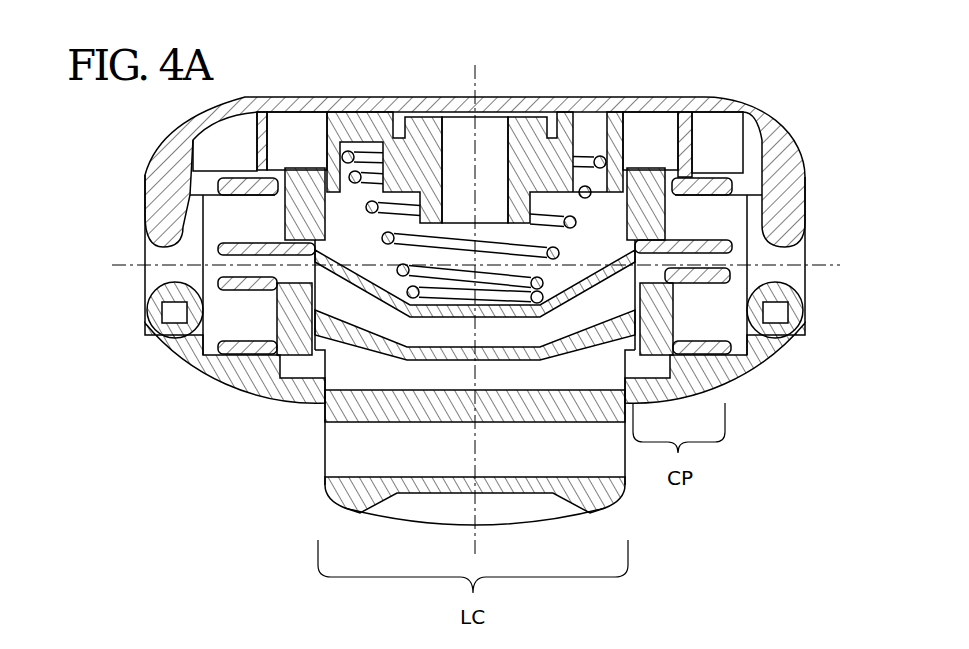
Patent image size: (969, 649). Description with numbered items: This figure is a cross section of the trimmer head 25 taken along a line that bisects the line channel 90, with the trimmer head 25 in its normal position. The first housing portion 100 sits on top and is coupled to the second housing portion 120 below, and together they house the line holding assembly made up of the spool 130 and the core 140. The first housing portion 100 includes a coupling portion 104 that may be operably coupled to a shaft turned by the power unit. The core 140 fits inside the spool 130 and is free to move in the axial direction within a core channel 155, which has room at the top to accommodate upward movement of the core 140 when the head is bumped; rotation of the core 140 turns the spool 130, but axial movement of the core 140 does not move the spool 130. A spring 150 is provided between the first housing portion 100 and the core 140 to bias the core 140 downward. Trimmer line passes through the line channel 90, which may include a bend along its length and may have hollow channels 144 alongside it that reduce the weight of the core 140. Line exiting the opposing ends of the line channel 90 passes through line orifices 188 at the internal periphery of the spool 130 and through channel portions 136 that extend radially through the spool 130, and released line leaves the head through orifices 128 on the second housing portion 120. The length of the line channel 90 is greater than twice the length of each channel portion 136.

The trimmer head 25 is at (472, 284).
The first housing portion 100 is at (783, 162).
The coupling portion 104 is at (463, 117).
The spring 150 is at (360, 177).
The core channel 155 is at (285, 130).
The spool 130 is at (262, 271).
The orifices 128 is at (152, 284).
The channel portions 136 is at (262, 277).
The line orifices 188 is at (312, 286).
The second housing portion 120 is at (723, 370).
The line channel 90 is at (413, 337).
The hollow channels 144 is at (344, 443).
The core 140 is at (344, 497).